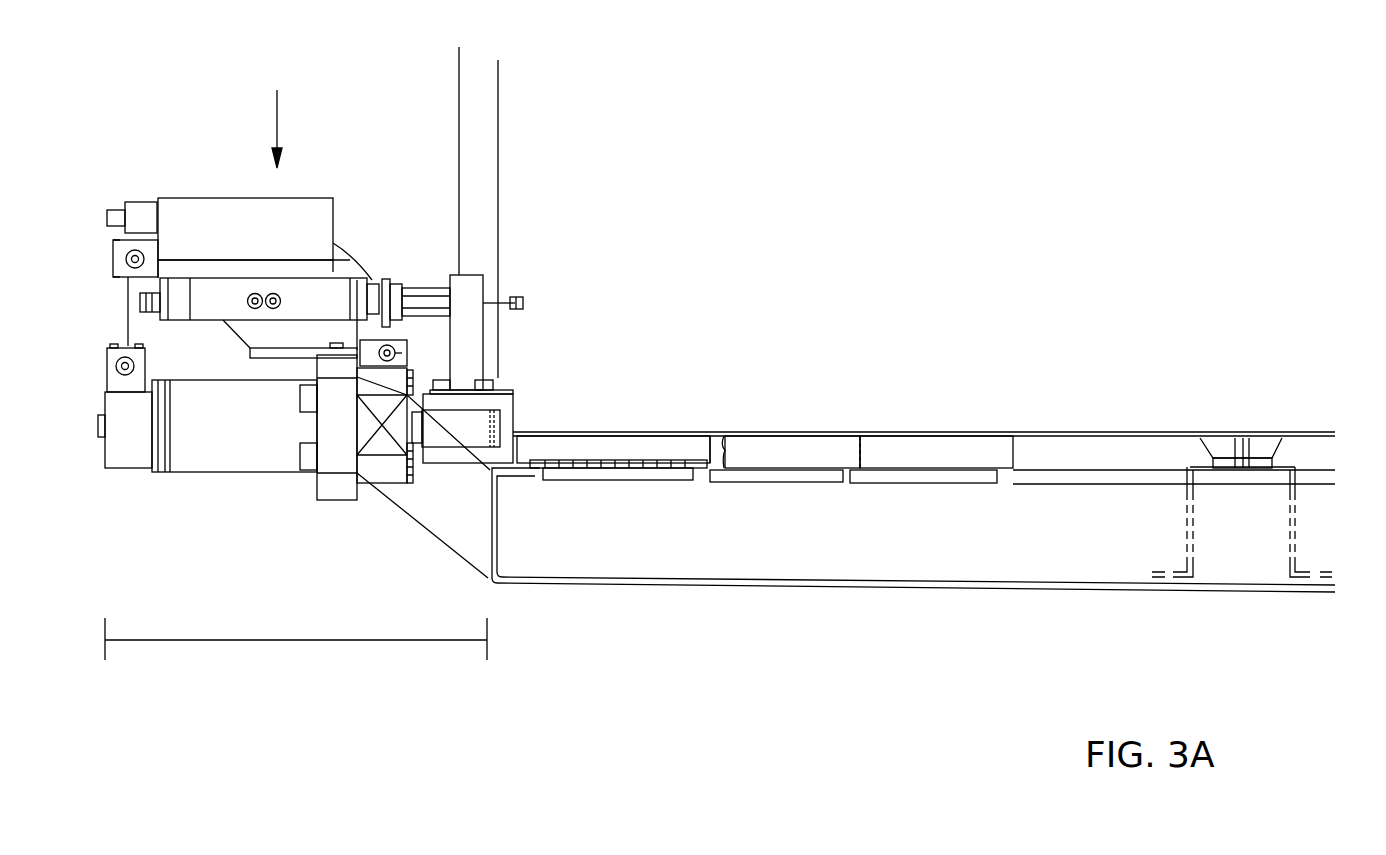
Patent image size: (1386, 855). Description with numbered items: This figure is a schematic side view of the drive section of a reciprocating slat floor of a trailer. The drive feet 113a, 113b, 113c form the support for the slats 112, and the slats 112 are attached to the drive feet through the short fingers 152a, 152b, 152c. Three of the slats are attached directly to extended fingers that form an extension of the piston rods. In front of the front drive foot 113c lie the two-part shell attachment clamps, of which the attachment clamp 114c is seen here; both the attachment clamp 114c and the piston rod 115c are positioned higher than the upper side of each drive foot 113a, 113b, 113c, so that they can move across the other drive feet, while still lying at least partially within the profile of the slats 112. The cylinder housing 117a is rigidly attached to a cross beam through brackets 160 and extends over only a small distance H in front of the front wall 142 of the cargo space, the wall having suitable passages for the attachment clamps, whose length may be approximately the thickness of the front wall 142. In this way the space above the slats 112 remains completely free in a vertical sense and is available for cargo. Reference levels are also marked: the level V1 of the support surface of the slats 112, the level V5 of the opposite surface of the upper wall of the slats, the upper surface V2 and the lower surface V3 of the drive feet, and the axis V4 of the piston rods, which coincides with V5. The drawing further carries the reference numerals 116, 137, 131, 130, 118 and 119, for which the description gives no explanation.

The pressing direction 116 is at (296, 127).
The drive cylinder 137 is at (168, 207).
The front wall 142 is at (484, 180).
The attachment clamp 114c is at (500, 396).
The piston rod 115c is at (483, 437).
The short finger 152c is at (618, 433).
The short finger 152b is at (790, 452).
The short finger 152a is at (937, 413).
The drive foot 113c is at (612, 481).
The drive foot 113b is at (780, 483).
The drive foot 113a is at (938, 484).
The cylinder housing 117a is at (248, 446).
The bracket 160 is at (433, 512).
The frame side wall 131 is at (488, 545).
The base frame 130 is at (810, 585).
The pad 118 is at (1218, 450).
The slat 112 is at (1295, 437).
The bracket 119 is at (1280, 550).
The level of the support surface of the slats V1 is at (1310, 437).
The upper surface of the drive feet V2 is at (1369, 471).
The lower surface of the drive feet V3 is at (1364, 501).
The axis of the piston rods V4 is at (58, 428).
The opposite surface of the upper wall of the slats V5 is at (1328, 437).
The distance H is at (296, 637).